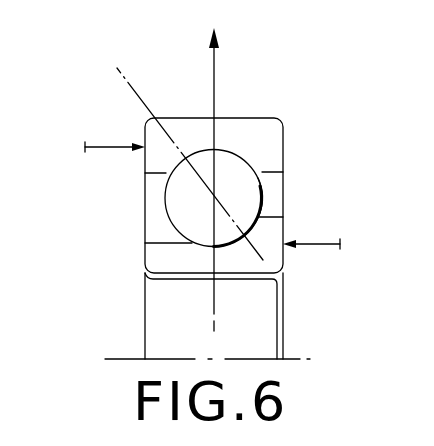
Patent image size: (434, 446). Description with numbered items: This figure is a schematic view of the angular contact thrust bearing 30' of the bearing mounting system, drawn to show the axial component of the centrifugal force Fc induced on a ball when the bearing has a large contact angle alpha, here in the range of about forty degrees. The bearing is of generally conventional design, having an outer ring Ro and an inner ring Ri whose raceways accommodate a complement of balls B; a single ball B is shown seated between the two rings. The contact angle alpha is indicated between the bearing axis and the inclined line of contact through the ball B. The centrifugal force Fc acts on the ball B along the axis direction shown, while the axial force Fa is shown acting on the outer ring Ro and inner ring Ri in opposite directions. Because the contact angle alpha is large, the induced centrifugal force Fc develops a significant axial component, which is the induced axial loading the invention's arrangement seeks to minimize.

The angular contact thrust bearing 30' is at (231, 167).
The balls B is at (181, 208).
The outer ring Ro is at (283, 146).
The inner ring Ri is at (237, 263).
The axial force Fa is at (212, 199).
The centrifugal force Fc is at (209, 165).
The contact angle alpha is at (204, 63).